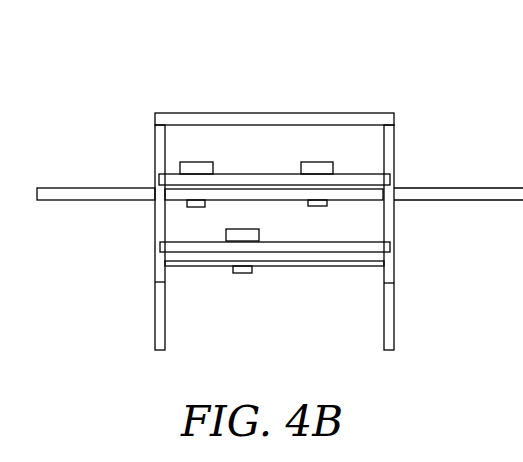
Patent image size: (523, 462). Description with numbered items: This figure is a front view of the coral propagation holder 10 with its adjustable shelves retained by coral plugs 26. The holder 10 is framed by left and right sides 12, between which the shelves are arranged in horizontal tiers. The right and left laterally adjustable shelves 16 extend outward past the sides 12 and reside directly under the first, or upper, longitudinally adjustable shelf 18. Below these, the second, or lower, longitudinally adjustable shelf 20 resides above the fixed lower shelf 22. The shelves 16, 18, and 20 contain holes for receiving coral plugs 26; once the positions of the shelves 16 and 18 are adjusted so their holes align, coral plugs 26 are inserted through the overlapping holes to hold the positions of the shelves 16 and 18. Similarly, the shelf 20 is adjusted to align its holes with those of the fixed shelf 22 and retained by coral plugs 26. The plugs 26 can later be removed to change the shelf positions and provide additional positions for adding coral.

The coral propagation holder 10 is at (162, 80).
The left and right sides 12 is at (155, 225).
The laterally adjustable shelves 16 is at (102, 193).
The first longitudinally adjustable shelf 18 is at (265, 178).
The second longitudinally adjustable shelf 20 is at (320, 247).
The fixed lower shelf 22 is at (348, 258).
The coral plugs 26 is at (203, 170).